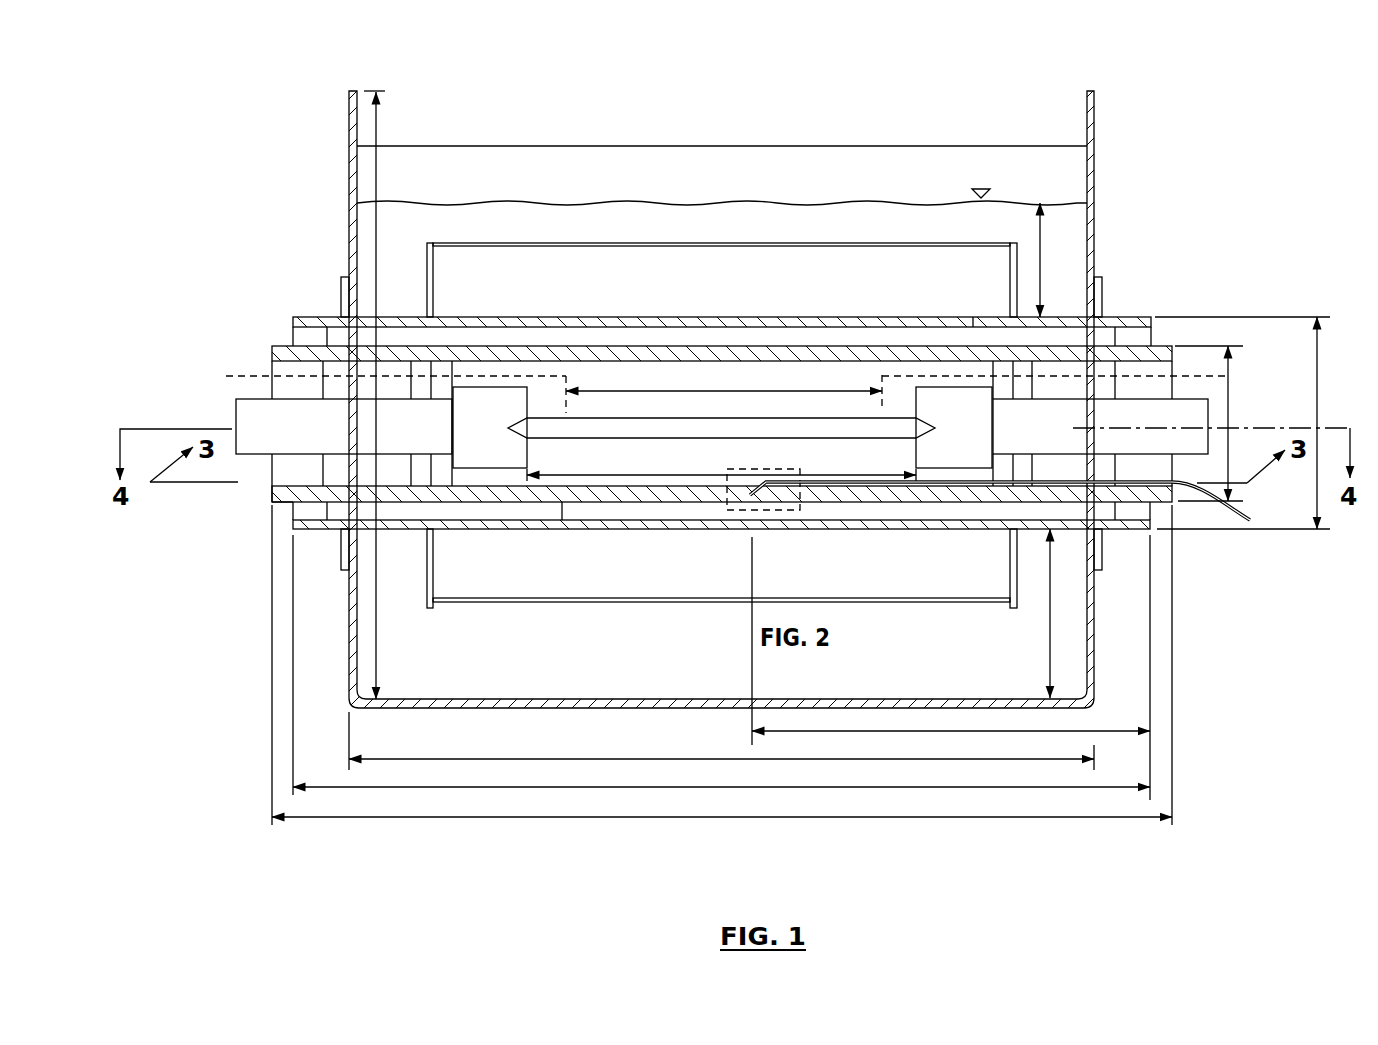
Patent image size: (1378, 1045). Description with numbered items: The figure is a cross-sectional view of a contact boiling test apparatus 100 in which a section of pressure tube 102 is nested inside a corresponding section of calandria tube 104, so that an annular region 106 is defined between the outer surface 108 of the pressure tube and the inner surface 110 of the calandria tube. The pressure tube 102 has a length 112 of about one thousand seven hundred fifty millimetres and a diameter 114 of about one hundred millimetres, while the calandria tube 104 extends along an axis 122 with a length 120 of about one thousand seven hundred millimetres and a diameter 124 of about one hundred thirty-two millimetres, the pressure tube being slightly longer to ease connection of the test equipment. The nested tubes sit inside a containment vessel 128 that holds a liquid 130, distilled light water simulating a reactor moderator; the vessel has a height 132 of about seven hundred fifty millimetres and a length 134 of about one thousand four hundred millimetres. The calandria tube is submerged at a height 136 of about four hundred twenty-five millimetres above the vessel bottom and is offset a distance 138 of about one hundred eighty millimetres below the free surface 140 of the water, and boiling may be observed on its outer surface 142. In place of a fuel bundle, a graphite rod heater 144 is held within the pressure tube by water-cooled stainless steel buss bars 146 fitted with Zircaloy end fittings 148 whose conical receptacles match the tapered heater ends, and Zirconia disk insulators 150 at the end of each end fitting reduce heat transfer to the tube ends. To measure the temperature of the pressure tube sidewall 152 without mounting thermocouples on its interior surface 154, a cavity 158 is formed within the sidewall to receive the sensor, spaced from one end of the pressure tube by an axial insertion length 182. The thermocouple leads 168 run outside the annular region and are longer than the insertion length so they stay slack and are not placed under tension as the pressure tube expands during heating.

The contact boiling test apparatus 100 is at (275, 128).
The pressure tube 102 is at (280, 350).
The calandria tube 104 is at (293, 322).
The annular region 106 is at (648, 507).
The outer surface of the pressure tube 108 is at (562, 505).
The inner surface of the calandria tube 110 is at (712, 518).
The pressure tube length 112 is at (780, 787).
The pressure tube diameter 114 is at (1232, 348).
The calandria tube length 120 is at (845, 759).
The axis 122 is at (1193, 428).
The calandria tube diameter 124 is at (1318, 315).
The containment vessel 128 is at (1100, 118).
The liquid 130 is at (1052, 266).
The vessel height 132 is at (376, 120).
The vessel length 134 is at (905, 817).
The height of the calandria tube above the vessel bottom 136 is at (1050, 640).
The offset distance below the free surface 138 is at (1041, 232).
The free surface of the water 140 is at (1015, 203).
The outer surface of the calandria tube 142 is at (917, 532).
The graphite rod heater 144 is at (700, 420).
The buss bars 146 is at (248, 415).
The end fittings 148 is at (511, 465).
The insulators 150 is at (1005, 385).
The pressure tube sidewall 152 is at (272, 492).
The interior surface of the pressure tube sidewall 154 is at (313, 487).
The cavity 158 is at (742, 490).
The leads 168 is at (1235, 520).
The axial insertion length 182 is at (928, 731).